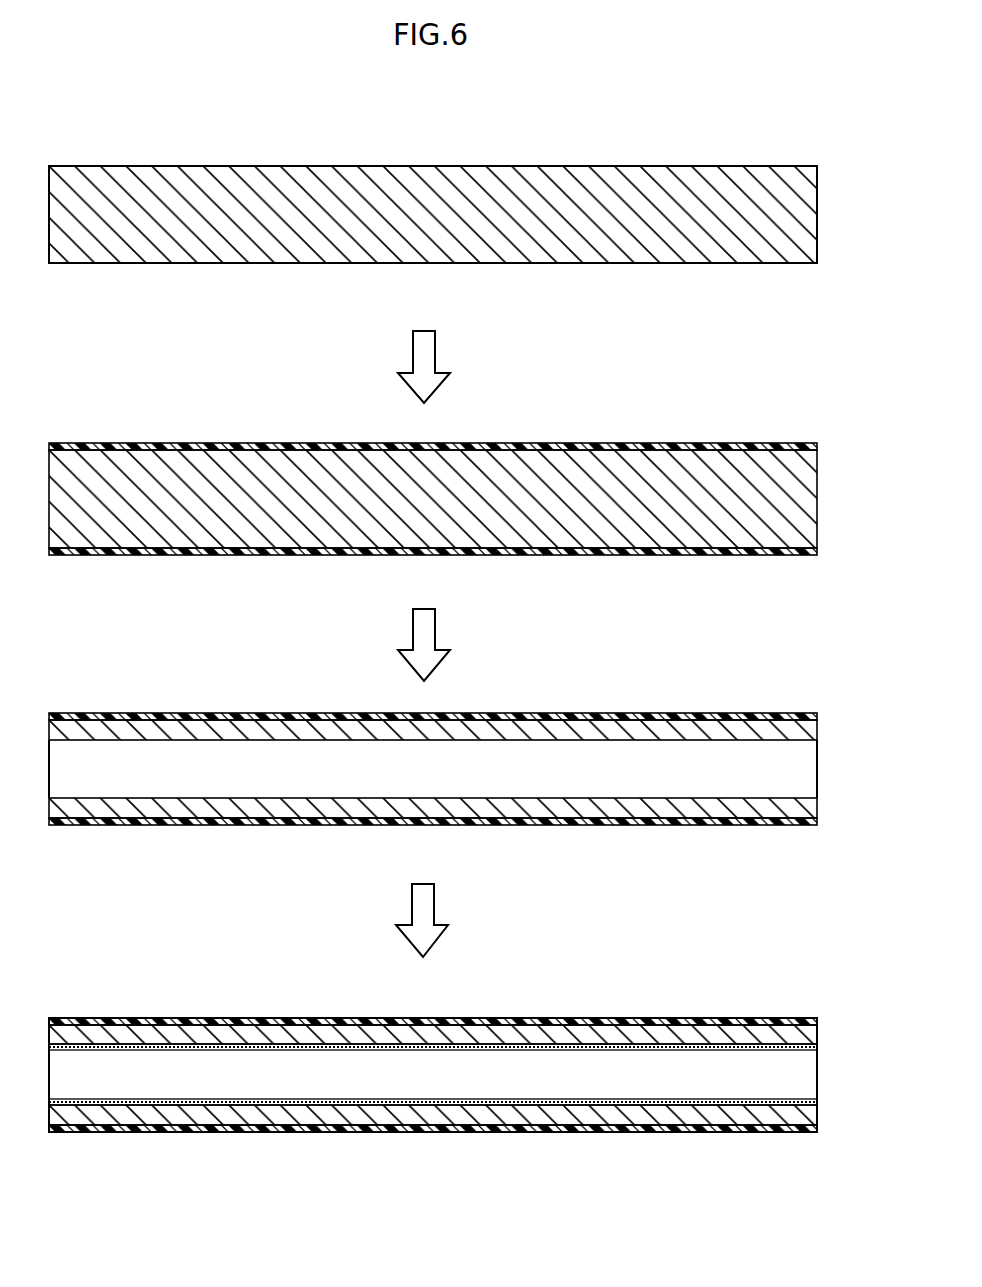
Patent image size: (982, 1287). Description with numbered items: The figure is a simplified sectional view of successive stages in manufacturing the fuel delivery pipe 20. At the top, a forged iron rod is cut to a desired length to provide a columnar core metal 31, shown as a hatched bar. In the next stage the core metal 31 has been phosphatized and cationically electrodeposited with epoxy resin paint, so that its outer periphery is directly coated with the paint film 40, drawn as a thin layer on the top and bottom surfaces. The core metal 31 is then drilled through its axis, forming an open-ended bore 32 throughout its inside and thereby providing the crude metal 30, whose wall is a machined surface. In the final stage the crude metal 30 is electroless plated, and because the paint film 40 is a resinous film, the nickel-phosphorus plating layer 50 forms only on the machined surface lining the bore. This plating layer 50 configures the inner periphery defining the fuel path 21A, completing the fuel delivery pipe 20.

The core metal 31 is at (394, 197).
The paint film 40 is at (670, 447).
The crude metal 30 is at (525, 732).
The open-ended bore 32 is at (693, 773).
The nickel-phosphorus plating layer 50 is at (633, 1045).
The fuel path 21A is at (707, 1085).
The fuel delivery pipe 20 is at (337, 978).